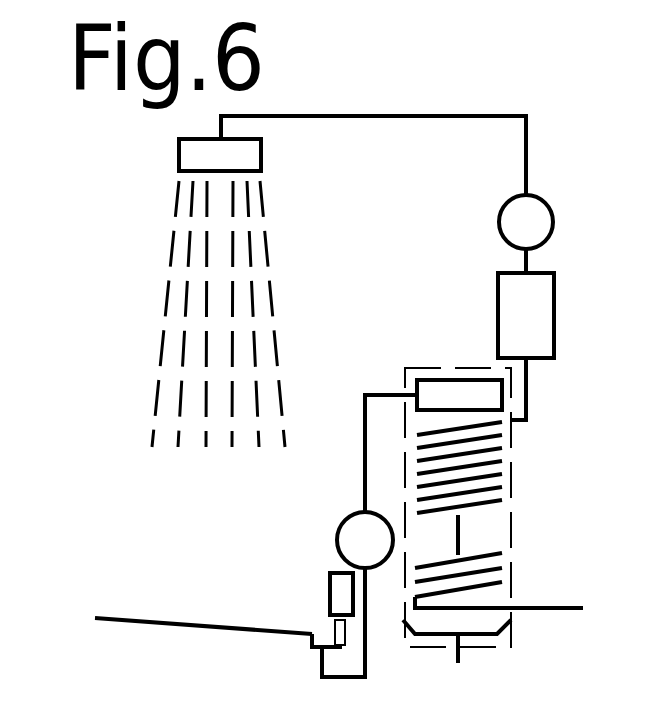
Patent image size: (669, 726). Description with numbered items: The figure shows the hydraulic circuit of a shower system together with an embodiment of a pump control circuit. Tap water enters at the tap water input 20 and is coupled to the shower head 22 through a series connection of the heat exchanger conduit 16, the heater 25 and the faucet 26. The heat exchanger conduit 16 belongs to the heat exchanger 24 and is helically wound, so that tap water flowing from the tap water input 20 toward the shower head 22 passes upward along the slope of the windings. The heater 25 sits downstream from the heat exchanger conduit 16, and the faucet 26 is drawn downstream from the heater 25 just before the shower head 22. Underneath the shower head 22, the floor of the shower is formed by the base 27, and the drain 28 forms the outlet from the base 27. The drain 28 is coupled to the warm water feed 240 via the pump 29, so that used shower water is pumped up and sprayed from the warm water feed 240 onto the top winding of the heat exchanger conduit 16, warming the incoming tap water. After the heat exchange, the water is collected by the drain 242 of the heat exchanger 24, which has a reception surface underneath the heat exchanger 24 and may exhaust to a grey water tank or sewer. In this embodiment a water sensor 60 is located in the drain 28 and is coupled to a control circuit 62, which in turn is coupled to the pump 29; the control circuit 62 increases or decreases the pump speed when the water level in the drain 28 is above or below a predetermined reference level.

The shower head 22 is at (262, 150).
The faucet 26 is at (553, 217).
The heater 25 is at (555, 308).
The warm water feed 240 is at (443, 378).
The heat exchanger 24 is at (512, 447).
The heat exchanger conduit 16 is at (512, 470).
The tap water input 20 is at (553, 607).
The drain 242 is at (487, 640).
The pump 29 is at (348, 517).
The control circuit 62 is at (330, 580).
The water sensor 60 is at (337, 633).
The base 27 is at (190, 623).
The drain 28 is at (312, 649).